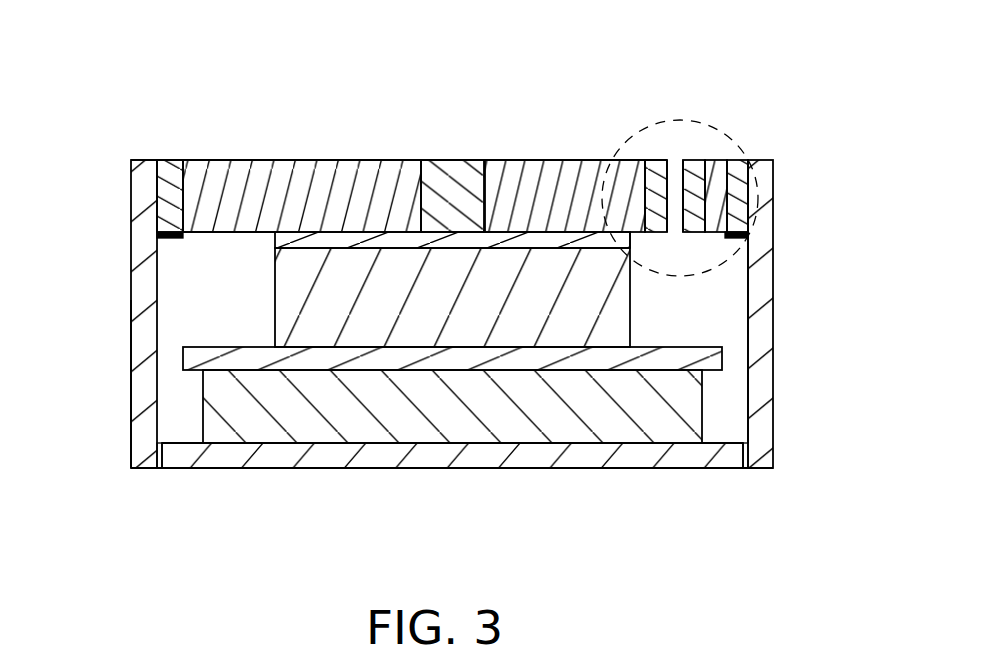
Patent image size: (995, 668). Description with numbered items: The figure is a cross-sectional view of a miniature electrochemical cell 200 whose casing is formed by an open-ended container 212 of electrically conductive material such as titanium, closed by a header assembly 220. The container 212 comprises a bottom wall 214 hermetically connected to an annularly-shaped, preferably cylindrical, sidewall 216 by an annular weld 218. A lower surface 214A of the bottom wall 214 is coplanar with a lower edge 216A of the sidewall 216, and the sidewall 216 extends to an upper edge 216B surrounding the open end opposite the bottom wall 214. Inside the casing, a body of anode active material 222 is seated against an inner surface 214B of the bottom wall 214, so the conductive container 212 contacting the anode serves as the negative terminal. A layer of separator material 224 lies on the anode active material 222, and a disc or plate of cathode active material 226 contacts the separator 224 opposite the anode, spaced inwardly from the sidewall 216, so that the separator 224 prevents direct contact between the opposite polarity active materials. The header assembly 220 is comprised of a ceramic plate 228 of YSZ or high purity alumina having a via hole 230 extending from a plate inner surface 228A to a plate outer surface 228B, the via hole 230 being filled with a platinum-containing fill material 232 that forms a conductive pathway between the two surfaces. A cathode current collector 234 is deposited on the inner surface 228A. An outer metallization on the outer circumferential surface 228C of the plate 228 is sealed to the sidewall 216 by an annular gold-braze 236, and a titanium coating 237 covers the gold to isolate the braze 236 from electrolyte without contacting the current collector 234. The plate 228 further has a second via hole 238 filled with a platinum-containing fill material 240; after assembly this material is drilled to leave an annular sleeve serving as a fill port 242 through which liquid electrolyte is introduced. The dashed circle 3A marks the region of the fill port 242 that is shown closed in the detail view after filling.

The miniature electrochemical cell 200 is at (449, 285).
The open-ended container 212 is at (440, 317).
The bottom wall 214 is at (633, 455).
The lower surface of the bottom wall 214A is at (472, 468).
The inner surface of the bottom wall 214B is at (170, 443).
The annular sidewall 216 is at (773, 432).
The lower edge of the sidewall 216A is at (133, 468).
The upper edge of the sidewall 216B is at (146, 160).
The annular weld 218 is at (158, 468).
The header assembly 220 is at (457, 242).
The anode active material 222 is at (330, 432).
The separator 224 is at (716, 357).
The cathode active material 226 is at (283, 337).
The ceramic plate 228 is at (315, 185).
The plate inner surface 228A is at (222, 234).
The plate outer surface 228B is at (237, 160).
The outer circumferential surface of the ceramic plate 228C is at (157, 235).
The via hole 230 is at (407, 195).
The platinum-containing fill material 232 is at (458, 178).
The cathode current collector 234 is at (630, 240).
The annular gold-braze 236 is at (168, 160).
The titanium coating 237 is at (748, 235).
The second via hole 238 is at (713, 180).
The platinum-containing fill material 240 is at (655, 162).
The fill port 242 is at (678, 175).
The FIG. 3A detail region 3A is at (712, 126).